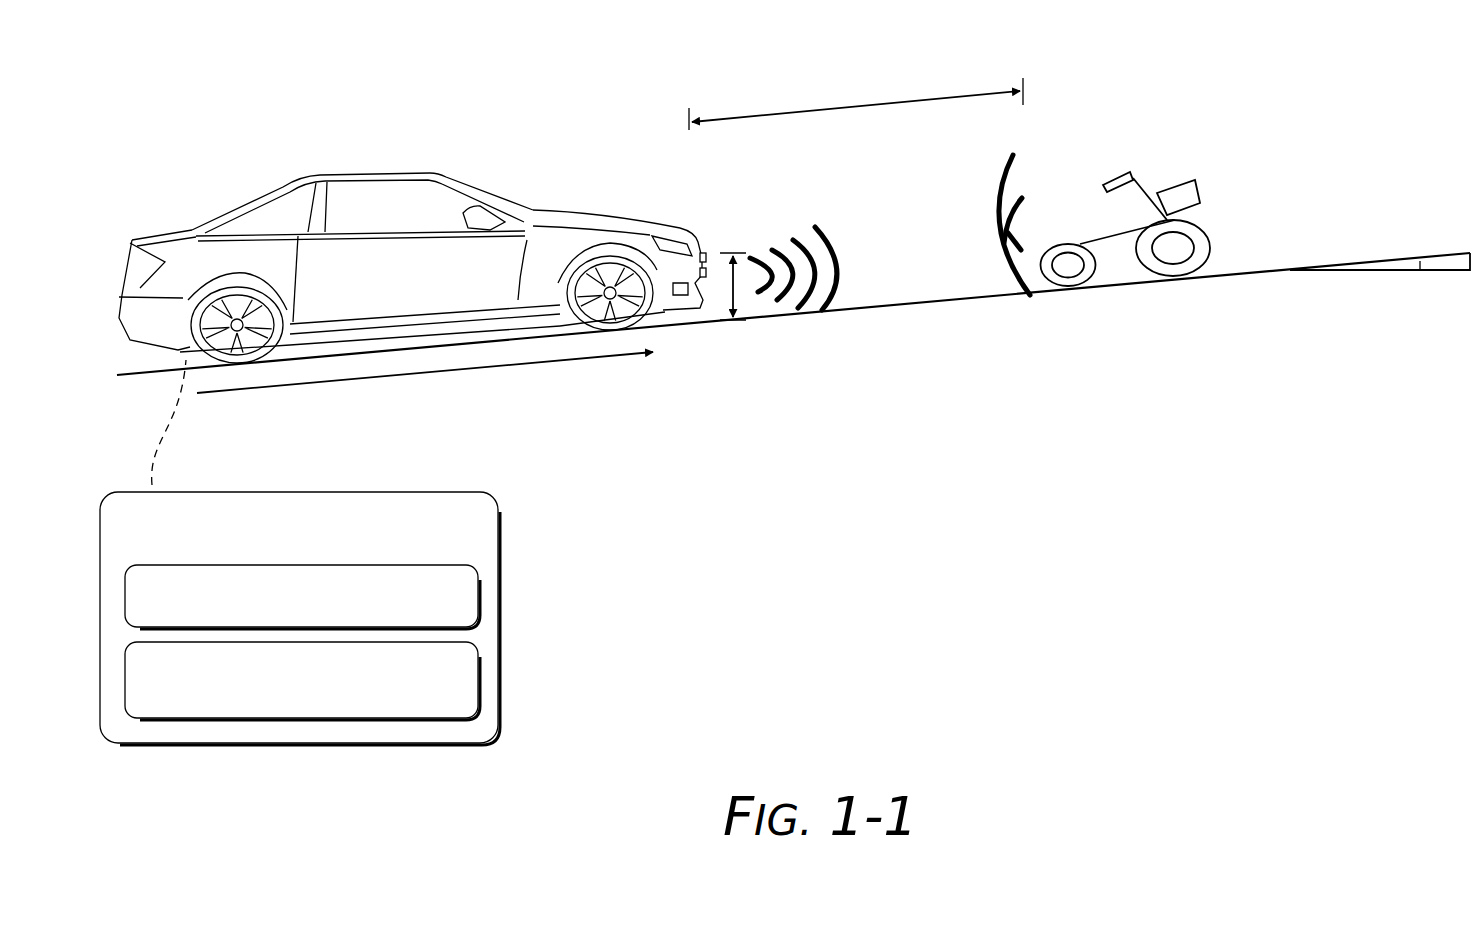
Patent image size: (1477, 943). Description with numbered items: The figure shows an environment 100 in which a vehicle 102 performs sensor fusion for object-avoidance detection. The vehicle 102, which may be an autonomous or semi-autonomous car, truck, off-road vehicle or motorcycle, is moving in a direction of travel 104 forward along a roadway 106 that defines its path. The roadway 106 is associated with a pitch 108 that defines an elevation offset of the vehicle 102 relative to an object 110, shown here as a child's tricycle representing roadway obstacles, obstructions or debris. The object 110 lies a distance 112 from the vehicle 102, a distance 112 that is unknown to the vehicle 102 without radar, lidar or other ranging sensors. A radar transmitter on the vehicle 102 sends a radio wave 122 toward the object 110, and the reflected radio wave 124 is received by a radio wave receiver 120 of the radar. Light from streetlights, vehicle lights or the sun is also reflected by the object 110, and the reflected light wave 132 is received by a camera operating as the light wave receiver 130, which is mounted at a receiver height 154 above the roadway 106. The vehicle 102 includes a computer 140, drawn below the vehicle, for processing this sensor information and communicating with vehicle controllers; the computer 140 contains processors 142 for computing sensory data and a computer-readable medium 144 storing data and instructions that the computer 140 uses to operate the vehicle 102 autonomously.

The environment 100 is at (230, 68).
The vehicle 102 is at (289, 170).
The direction of travel 104 is at (538, 364).
The roadway 106 is at (1285, 273).
The pitch 108 is at (1422, 268).
The object 110 is at (1232, 203).
The distance 112 is at (843, 106).
The radio wave receiver 120 is at (704, 277).
The radio wave 122 is at (855, 267).
The reflected radio wave 124 is at (1011, 292).
The light wave receiver 130 is at (704, 256).
The reflected light wave 132 is at (1012, 158).
The computer 140 is at (313, 555).
The processors 142 is at (313, 618).
The computer-readable medium 144 is at (313, 705).
The receiver height 154 is at (733, 320).